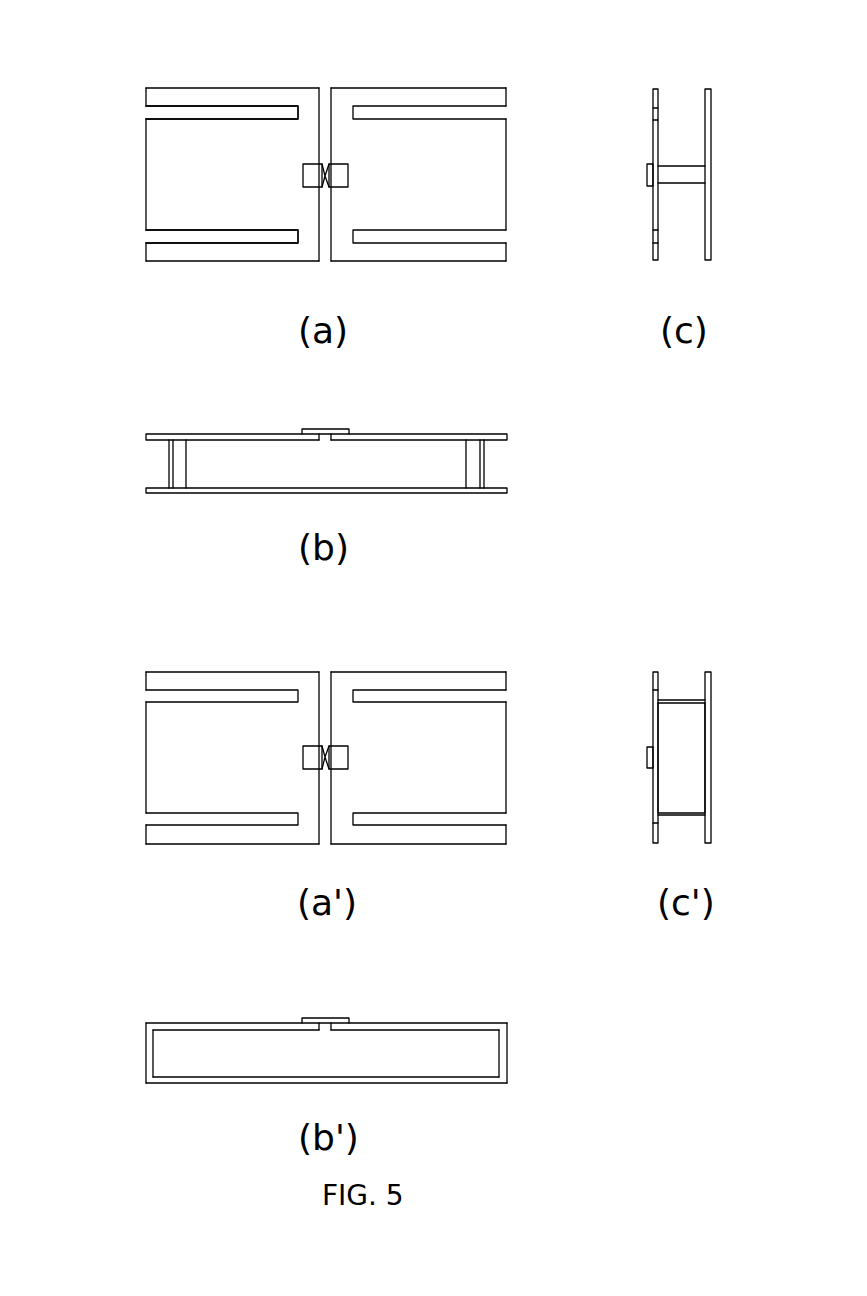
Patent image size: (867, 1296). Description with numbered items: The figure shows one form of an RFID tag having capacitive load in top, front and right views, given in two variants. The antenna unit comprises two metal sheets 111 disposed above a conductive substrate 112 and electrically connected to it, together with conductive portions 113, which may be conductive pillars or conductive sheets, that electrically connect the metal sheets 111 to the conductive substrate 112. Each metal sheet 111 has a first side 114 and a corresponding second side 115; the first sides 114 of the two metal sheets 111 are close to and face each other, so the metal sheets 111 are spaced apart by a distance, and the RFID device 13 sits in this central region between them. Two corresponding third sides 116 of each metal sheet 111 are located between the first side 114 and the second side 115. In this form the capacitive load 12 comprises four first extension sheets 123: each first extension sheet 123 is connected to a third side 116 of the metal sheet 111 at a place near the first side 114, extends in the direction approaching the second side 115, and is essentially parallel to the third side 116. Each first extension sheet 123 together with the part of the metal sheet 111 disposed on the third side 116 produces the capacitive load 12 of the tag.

The capacitive load 12 is at (160, 85).
The RFID device 13 is at (325, 175).
The metal sheet 111 is at (168, 211).
The conductive substrate 112 is at (712, 212).
The conductive portion 113 is at (678, 170).
The first side 114 is at (322, 228).
The second side 115 is at (146, 178).
The third side 116 is at (162, 114).
The first extension sheet 123 is at (203, 95).